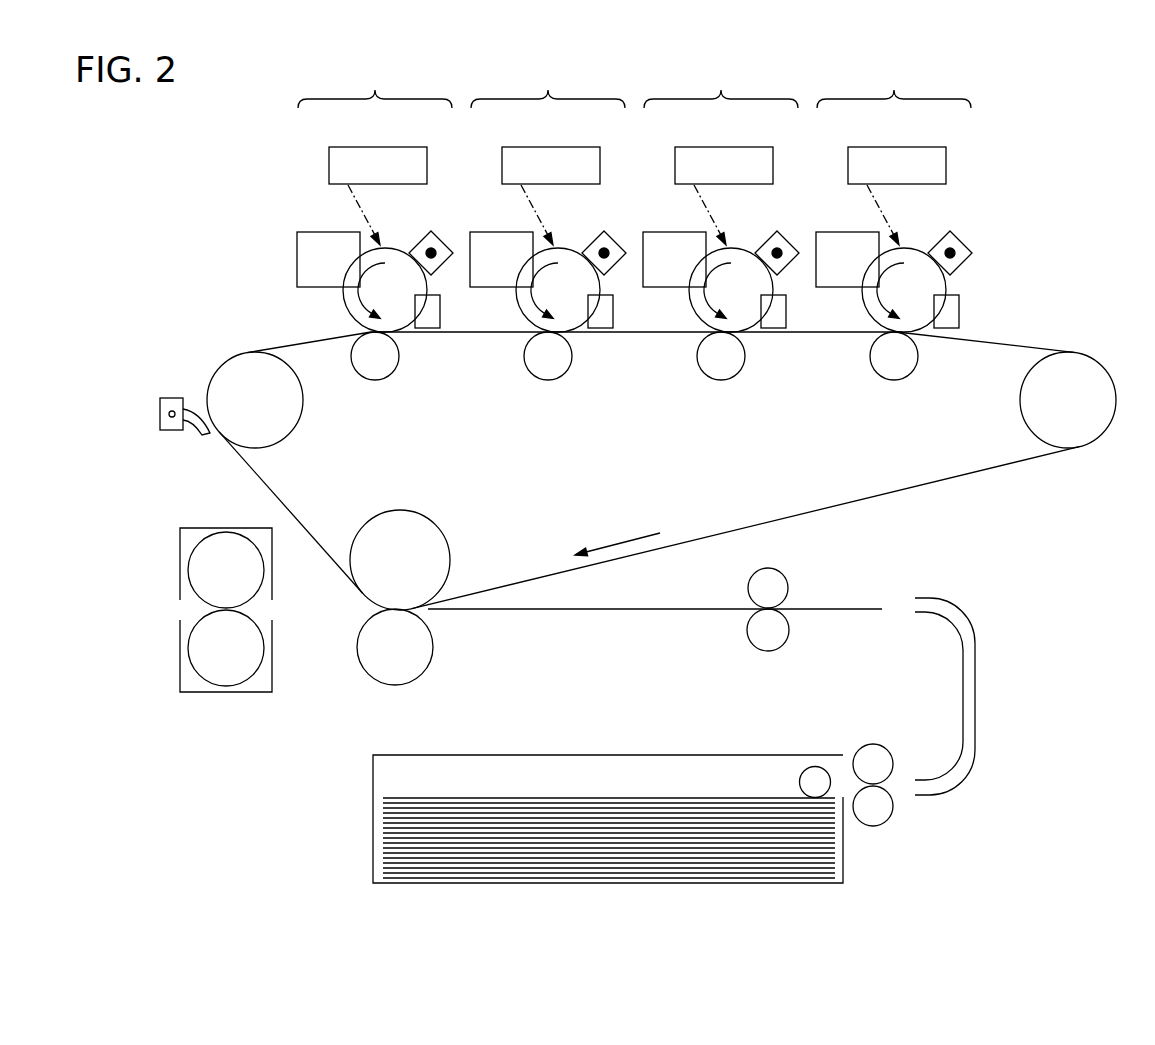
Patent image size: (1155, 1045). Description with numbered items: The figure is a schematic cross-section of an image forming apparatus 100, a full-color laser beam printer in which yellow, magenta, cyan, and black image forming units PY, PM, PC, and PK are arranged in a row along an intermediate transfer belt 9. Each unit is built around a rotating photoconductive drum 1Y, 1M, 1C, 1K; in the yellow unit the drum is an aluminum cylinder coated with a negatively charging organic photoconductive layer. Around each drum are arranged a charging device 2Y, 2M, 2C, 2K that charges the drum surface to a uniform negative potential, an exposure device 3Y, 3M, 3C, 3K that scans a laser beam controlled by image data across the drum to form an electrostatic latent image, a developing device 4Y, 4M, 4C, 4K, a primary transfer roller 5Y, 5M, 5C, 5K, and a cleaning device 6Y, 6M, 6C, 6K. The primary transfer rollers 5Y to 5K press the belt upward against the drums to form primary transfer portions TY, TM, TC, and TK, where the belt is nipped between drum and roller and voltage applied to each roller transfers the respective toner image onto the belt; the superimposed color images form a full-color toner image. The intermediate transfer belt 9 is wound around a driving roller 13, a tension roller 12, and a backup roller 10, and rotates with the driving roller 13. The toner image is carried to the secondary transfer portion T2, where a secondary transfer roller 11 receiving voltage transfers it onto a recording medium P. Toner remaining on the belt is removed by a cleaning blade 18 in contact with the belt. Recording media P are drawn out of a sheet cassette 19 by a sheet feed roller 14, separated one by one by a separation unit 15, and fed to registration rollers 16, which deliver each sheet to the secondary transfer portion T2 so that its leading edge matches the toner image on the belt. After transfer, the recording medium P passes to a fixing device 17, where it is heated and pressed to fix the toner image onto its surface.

The image forming apparatus 100 is at (1082, 178).
The image forming unit PY is at (370, 244).
The image forming unit PM is at (542, 244).
The image forming unit PC is at (716, 244).
The image forming unit PK is at (889, 244).
The photoconductive drum 1Y is at (355, 313).
The photoconductive drum 1M is at (528, 313).
The photoconductive drum 1C is at (701, 313).
The photoconductive drum 1K is at (874, 313).
The charging device 2Y is at (447, 242).
The charging device 2M is at (620, 242).
The charging device 2C is at (793, 242).
The charging device 2K is at (966, 242).
The exposure device 3Y is at (380, 147).
The exposure device 3M is at (553, 147).
The exposure device 3C is at (726, 147).
The exposure device 3K is at (899, 147).
The developing device 4Y is at (325, 232).
The developing device 4M is at (498, 232).
The developing device 4C is at (671, 232).
The developing device 4K is at (844, 232).
The primary transfer roller 5Y is at (379, 378).
The primary transfer roller 5M is at (552, 378).
The primary transfer roller 5C is at (725, 378).
The primary transfer roller 5K is at (898, 378).
The cleaning device 6Y is at (432, 328).
The cleaning device 6M is at (605, 328).
The cleaning device 6C is at (778, 328).
The cleaning device 6K is at (951, 328).
The primary transfer portion TY is at (361, 335).
The primary transfer portion TM is at (534, 335).
The primary transfer portion TC is at (707, 335).
The primary transfer portion TK is at (880, 335).
The intermediate transfer belt 9 is at (775, 518).
The backup roller 10 is at (422, 523).
The secondary transfer roller 11 is at (413, 672).
The tension roller 12 is at (267, 438).
The driving roller 13 is at (1096, 429).
The sheet feed roller 14 is at (817, 767).
The separation unit 15 is at (878, 745).
The registration rollers 16 is at (767, 652).
The fixing device 17 is at (228, 692).
The cleaning blade 18 is at (200, 433).
The sheet cassette 19 is at (373, 780).
The recording medium P is at (588, 612).
The secondary transfer portion T2 is at (390, 608).